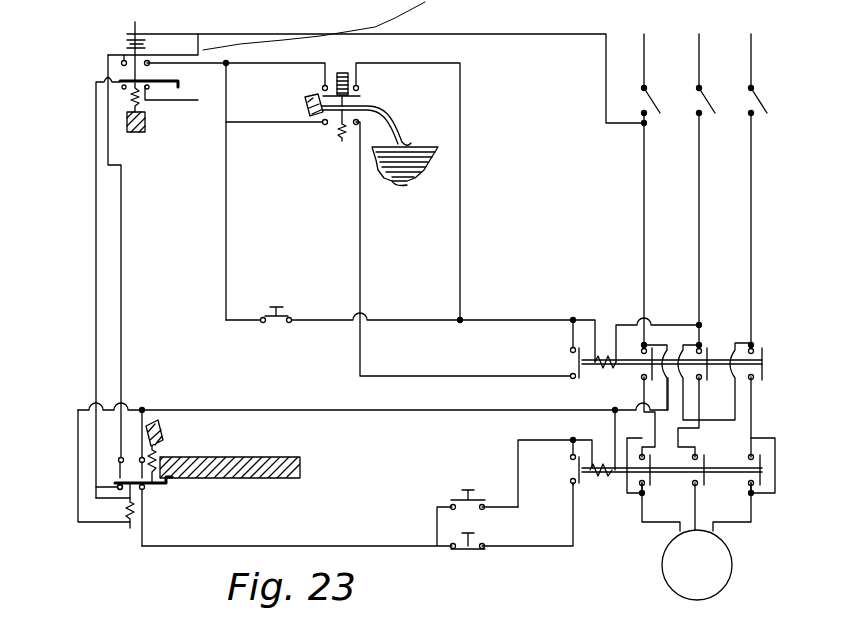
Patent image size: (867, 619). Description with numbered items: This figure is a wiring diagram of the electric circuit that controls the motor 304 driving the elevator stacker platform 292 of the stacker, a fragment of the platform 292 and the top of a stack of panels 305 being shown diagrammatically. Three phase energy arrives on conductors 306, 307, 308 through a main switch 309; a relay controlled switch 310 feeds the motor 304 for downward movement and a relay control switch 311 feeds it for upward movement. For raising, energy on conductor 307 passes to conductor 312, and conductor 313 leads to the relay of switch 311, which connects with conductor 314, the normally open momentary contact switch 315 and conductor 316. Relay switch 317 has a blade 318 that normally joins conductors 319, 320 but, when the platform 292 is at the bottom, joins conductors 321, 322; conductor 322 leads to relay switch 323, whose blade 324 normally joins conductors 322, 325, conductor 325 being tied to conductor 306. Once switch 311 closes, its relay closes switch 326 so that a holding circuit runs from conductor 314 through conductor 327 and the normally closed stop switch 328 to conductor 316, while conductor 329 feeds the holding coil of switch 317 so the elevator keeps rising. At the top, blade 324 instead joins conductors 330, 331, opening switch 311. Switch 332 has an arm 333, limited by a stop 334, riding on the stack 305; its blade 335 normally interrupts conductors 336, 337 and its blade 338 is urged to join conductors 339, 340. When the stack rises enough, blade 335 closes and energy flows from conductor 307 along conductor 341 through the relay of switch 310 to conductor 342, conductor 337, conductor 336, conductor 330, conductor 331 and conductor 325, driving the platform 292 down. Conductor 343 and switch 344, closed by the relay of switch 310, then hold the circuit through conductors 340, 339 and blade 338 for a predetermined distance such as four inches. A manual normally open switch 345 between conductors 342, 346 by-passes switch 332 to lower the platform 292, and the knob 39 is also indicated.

The elevator stacker platform 292 is at (243, 461).
The motor 304 is at (722, 572).
The stack of panels 305 is at (402, 185).
The conductor 306 is at (645, 60).
The conductor 307 is at (700, 59).
The conductor 308 is at (753, 55).
The main switch 309 is at (768, 100).
The relay controlled switch 310 is at (768, 357).
The relay control switch 311 is at (630, 497).
The conductor 312 is at (314, 410).
The conductor 313 is at (612, 421).
The conductor 314 is at (555, 440).
The momentary contact switch 315 is at (449, 501).
The conductor 316 is at (310, 546).
The relay switch 317 is at (115, 535).
The blade 318 is at (162, 488).
The conductor 319 is at (121, 288).
The conductor 320 is at (160, 421).
The conductor 321 is at (142, 530).
The conductor 322 is at (96, 292).
The relay switch 323 is at (92, 70).
The blade 324 is at (165, 95).
The conductor 325 is at (198, 99).
The switch 326 is at (575, 470).
The conductor 327 is at (540, 546).
The stop switch 328 is at (466, 557).
The conductor 329 is at (95, 522).
The conductor 330 is at (203, 63).
The conductor 331 is at (182, 53).
The switch 332 is at (370, 100).
The arm 333 is at (385, 118).
The stop 334 is at (375, 109).
The blade 335 is at (326, 85).
The conductor 336 is at (316, 62).
The conductor 337 is at (427, 63).
The blade 338 is at (333, 128).
The conductor 339 is at (262, 122).
The conductor 340 is at (358, 197).
The conductor 341 is at (620, 325).
The conductor 342 is at (530, 320).
The conductor 343 is at (572, 340).
The switch 344 is at (573, 362).
The normally open switch 345 is at (270, 326).
The conductor 346 is at (230, 211).
The handle knob 39 is at (138, 132).